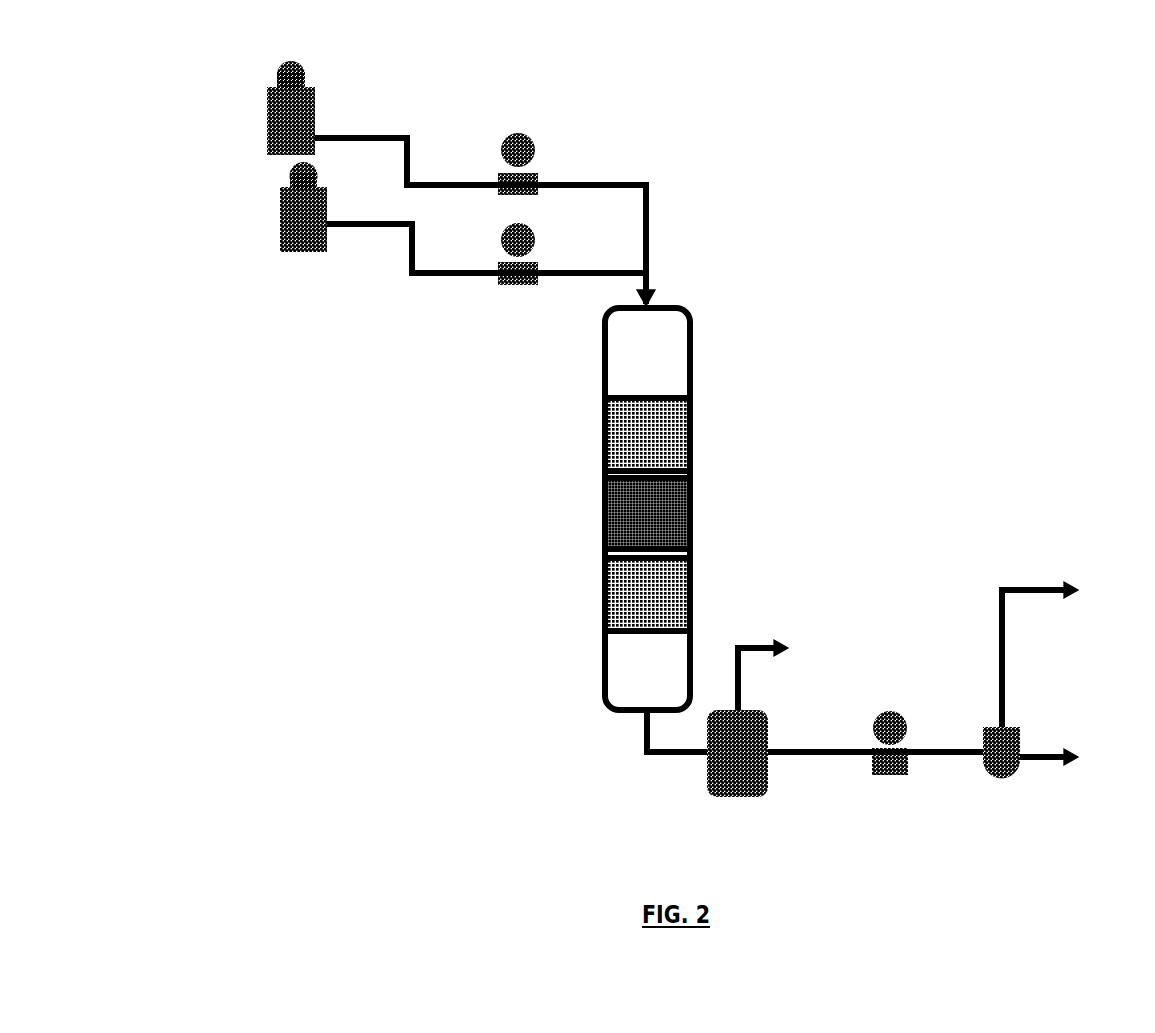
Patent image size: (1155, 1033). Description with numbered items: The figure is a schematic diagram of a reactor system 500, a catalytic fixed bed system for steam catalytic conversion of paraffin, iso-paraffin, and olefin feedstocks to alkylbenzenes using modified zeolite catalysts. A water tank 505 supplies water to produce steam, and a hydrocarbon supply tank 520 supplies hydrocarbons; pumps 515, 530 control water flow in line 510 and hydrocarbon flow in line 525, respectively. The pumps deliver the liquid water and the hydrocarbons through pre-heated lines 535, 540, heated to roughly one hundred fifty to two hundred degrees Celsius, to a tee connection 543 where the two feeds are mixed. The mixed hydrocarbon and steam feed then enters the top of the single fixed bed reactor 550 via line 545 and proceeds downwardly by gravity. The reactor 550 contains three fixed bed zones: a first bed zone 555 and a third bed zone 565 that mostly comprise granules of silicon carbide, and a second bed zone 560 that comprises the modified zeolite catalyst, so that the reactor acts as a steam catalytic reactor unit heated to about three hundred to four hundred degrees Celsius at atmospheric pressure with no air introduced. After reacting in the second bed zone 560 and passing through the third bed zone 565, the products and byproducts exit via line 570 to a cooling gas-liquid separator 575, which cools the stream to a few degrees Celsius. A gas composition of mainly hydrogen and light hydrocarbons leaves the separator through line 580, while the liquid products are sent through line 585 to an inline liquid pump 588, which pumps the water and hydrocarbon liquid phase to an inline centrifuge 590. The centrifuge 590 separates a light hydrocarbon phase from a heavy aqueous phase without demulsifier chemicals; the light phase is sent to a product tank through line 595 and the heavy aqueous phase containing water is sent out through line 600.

The reactor system 500 is at (1038, 204).
The water tank 505 is at (262, 125).
The line 510 is at (392, 132).
The pump 515 is at (513, 123).
The hydrocarbon supply tank 520 is at (270, 223).
The line 525 is at (353, 233).
The pump 530 is at (508, 287).
The pre-heated line 535 is at (613, 175).
The pre-heated line 540 is at (588, 270).
The tee connection 543 is at (660, 250).
The line 545 is at (657, 285).
The fixed bed reactor 550 is at (762, 408).
The first bed zone 555 is at (590, 442).
The second bed zone 560 is at (588, 512).
The third bed zone 565 is at (590, 600).
The line 570 is at (642, 752).
The cooling gas-liquid separator 575 is at (730, 797).
The line 580 is at (745, 640).
The line 585 is at (830, 758).
The inline liquid pump 588 is at (900, 782).
The inline centrifuge 590 is at (1010, 785).
The line 595 is at (1062, 578).
The line 600 is at (1065, 752).